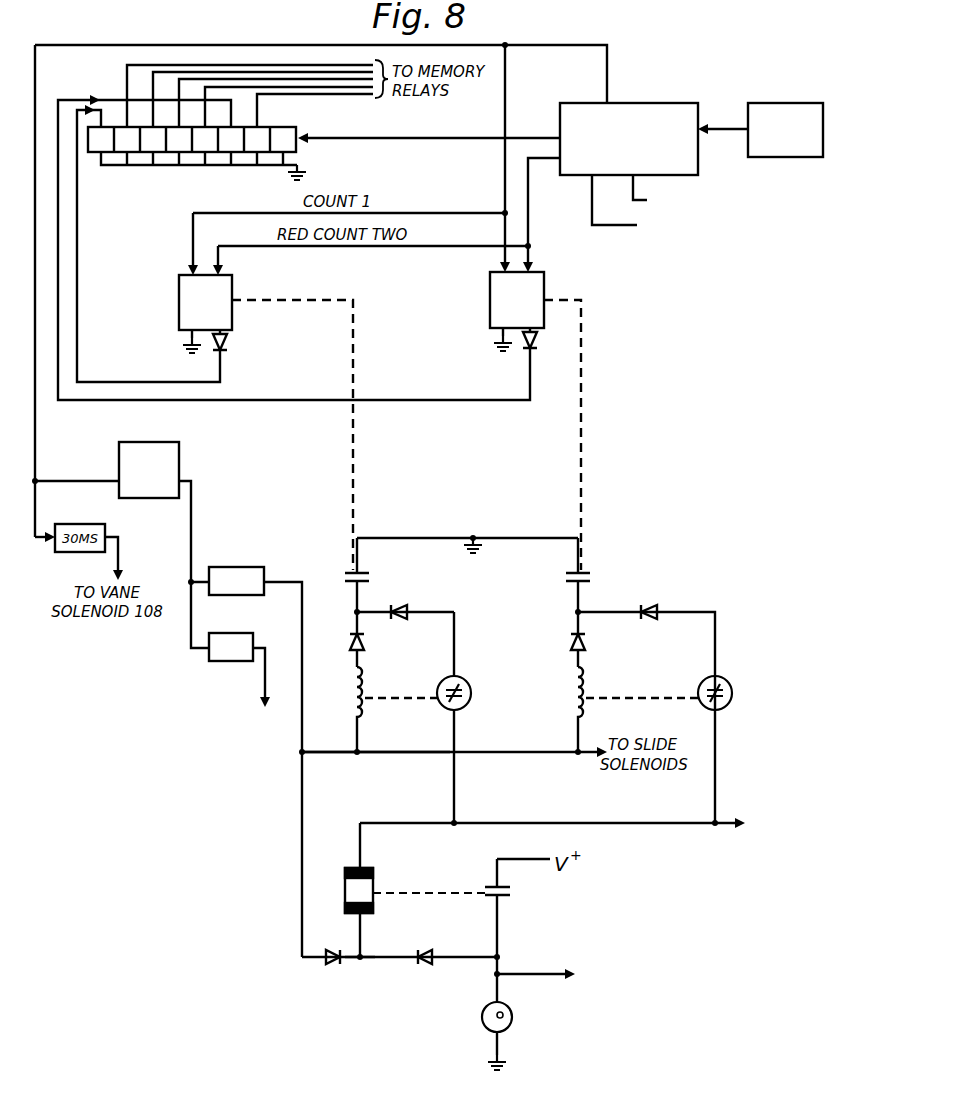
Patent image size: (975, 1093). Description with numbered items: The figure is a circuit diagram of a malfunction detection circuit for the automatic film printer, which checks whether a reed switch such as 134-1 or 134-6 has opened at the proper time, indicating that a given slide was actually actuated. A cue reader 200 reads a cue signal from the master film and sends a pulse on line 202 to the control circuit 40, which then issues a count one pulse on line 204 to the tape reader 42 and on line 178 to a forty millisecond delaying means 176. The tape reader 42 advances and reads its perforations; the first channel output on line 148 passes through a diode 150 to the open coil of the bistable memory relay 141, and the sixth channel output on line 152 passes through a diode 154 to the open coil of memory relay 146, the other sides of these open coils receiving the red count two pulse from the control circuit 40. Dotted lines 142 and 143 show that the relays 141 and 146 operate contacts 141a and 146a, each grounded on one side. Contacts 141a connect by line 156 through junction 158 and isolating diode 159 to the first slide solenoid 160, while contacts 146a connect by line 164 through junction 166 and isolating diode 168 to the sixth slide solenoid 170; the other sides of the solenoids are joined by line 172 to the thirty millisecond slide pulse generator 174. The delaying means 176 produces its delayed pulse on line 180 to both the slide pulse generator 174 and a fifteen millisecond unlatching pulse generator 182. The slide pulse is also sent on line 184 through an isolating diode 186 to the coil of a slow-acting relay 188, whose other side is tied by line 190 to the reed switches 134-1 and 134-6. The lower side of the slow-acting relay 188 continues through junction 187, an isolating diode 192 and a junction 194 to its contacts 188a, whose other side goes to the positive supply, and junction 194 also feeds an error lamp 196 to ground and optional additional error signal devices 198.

The line 178 is at (488, 45).
The tape reader 42 is at (297, 127).
The line 204 is at (385, 139).
The control circuit 40 is at (648, 103).
The line 202 is at (722, 128).
The cue reader 200 is at (780, 103).
The line 148 is at (78, 218).
The line 152 is at (60, 282).
The memory relay 141 is at (205, 314).
The dotted line 142 is at (290, 299).
The diode 150 is at (228, 347).
The memory relay 146 is at (517, 311).
The dotted line 143 is at (565, 301).
The diode 154 is at (537, 345).
The delaying means 176 is at (170, 442).
The line 180 is at (191, 520).
The slide pulse generator 174 is at (238, 567).
The line 184 is at (285, 582).
The unlatching pulse generator 182 is at (238, 661).
The relay contacts 141a is at (369, 576).
The line 156 is at (355, 590).
The junction 158 is at (355, 612).
The isolating diode 159 is at (350, 645).
The first slide solenoid 160 is at (351, 680).
The reed switch 134-1 is at (467, 704).
The line 172 is at (402, 752).
The relay contacts 146a is at (590, 577).
The line 164 is at (576, 593).
The junction 166 is at (576, 612).
The isolating diode 168 is at (568, 635).
The sixth slide solenoid 170 is at (570, 688).
The reed switch 134-6 is at (728, 682).
The line 190 is at (395, 823).
The slow-acting relay 188 is at (357, 868).
The contacts 188a is at (511, 890).
The junction 187 is at (364, 954).
The isolating diode 186 is at (335, 963).
The isolating diode 192 is at (425, 963).
The junction 194 is at (502, 956).
The error signal devices 198 is at (540, 977).
The error lamp 196 is at (512, 1020).